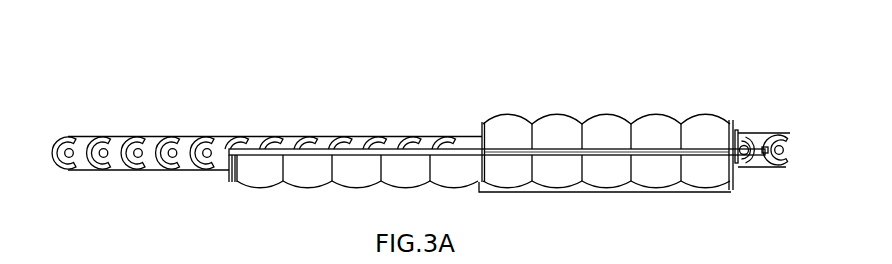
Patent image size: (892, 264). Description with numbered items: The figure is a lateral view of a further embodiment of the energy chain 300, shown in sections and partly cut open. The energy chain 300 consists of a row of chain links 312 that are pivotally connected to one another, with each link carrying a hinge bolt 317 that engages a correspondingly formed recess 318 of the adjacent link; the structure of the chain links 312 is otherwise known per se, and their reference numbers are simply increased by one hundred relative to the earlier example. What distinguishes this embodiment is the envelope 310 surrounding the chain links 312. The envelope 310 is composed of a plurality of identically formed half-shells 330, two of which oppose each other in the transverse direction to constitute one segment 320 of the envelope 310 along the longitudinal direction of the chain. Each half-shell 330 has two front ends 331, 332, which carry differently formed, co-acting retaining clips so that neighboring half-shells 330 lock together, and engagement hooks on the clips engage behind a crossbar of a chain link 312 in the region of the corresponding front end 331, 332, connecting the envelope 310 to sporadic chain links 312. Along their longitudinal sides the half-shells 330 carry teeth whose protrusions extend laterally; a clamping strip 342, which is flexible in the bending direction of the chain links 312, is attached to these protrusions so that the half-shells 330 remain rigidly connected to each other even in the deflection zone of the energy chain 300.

The energy chain 300 is at (627, 37).
The envelope 310 is at (644, 110).
The chain links 312 is at (97, 132).
The hinge bolt 317 is at (784, 134).
The recess 318 is at (62, 165).
The segment 320 is at (603, 192).
The half-shell 330 is at (558, 128).
The front end 331 is at (741, 122).
The front end 332 is at (476, 128).
The clamping strip 342 is at (273, 155).